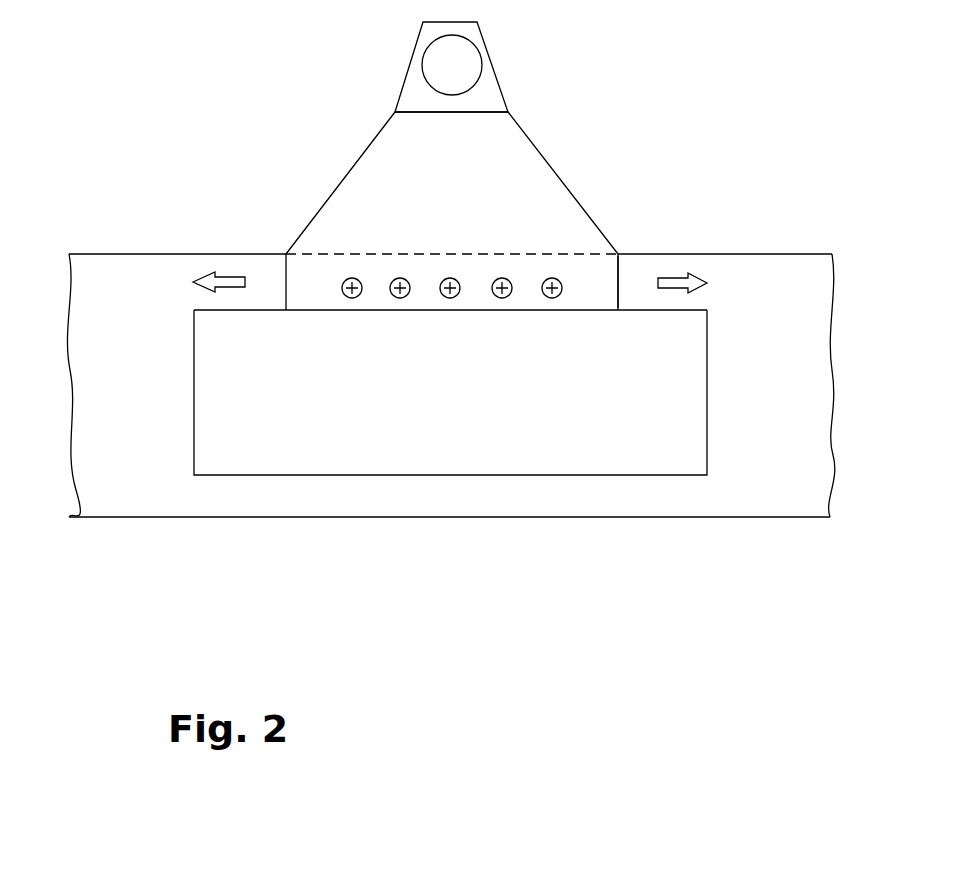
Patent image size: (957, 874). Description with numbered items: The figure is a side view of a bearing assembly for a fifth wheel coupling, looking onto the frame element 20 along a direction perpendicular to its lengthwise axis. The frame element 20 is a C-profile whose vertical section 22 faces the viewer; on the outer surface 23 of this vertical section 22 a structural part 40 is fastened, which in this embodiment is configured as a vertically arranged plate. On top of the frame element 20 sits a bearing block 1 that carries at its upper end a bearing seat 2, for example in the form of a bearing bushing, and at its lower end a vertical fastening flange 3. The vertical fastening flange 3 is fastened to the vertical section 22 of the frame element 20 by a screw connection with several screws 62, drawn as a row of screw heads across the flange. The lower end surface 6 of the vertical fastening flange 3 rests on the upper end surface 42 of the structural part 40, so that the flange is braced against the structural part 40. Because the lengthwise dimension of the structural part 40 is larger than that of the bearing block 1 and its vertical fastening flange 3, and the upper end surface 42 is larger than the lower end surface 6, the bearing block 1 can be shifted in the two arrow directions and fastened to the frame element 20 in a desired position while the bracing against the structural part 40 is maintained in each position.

The bearing block 1 is at (347, 127).
The bearing seat 2 is at (490, 50).
The vertical fastening flange 3 is at (313, 262).
The lower end surface 6 is at (313, 312).
The frame element 20 is at (785, 253).
The vertical section 22 is at (90, 342).
The outer surface 23 is at (798, 473).
The structural part 40 is at (608, 478).
The upper end surface 42 is at (640, 310).
The screws 62 is at (406, 278).